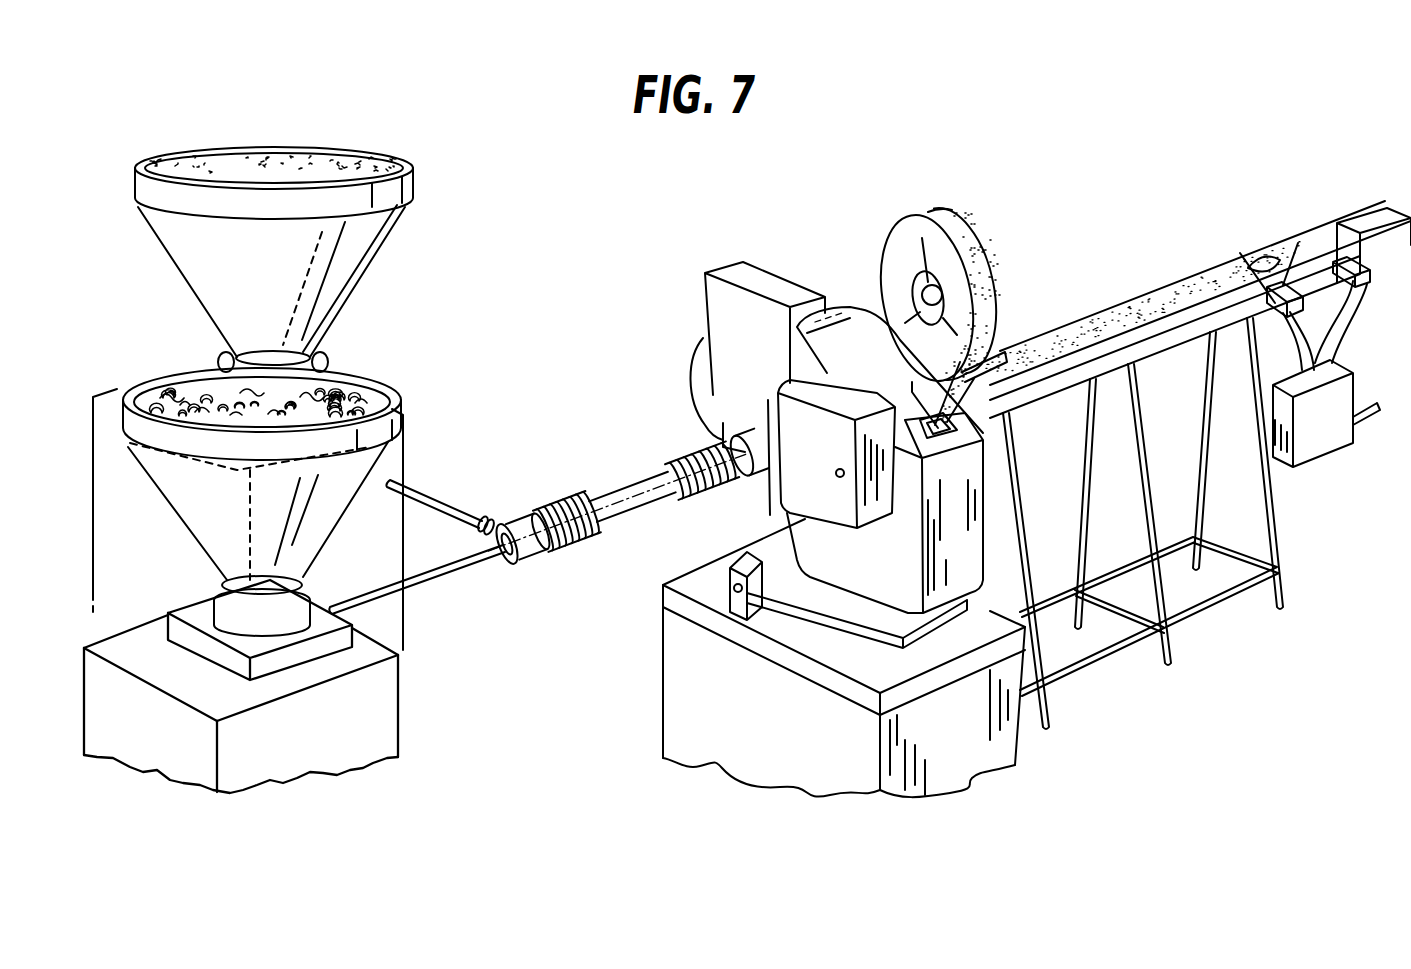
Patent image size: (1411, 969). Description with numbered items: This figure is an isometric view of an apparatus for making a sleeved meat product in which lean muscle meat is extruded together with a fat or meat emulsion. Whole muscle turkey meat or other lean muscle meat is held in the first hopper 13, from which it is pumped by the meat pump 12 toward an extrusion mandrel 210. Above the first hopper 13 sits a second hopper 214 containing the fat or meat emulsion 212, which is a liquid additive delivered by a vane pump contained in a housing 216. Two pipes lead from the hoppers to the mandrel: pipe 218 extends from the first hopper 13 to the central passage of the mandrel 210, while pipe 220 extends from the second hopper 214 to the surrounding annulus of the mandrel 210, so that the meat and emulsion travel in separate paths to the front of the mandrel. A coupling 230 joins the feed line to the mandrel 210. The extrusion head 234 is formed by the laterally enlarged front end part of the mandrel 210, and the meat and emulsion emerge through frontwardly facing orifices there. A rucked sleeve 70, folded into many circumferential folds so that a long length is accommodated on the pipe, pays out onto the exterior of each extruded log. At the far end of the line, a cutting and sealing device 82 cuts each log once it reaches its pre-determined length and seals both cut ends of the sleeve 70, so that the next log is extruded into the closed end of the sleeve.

The meat pump 12 is at (380, 706).
The first hopper 13 is at (194, 516).
The sleeve 70 is at (569, 548).
The cutting and sealing device 82 is at (900, 587).
The extrusion mandrel 210 is at (634, 512).
The fat or meat emulsion 212 is at (313, 160).
The second hopper 214 is at (360, 285).
The housing 216 is at (403, 458).
The pipe 218 is at (441, 574).
The pipe 220 is at (438, 497).
The coupling 230 is at (498, 523).
The extrusion head 234 is at (747, 447).